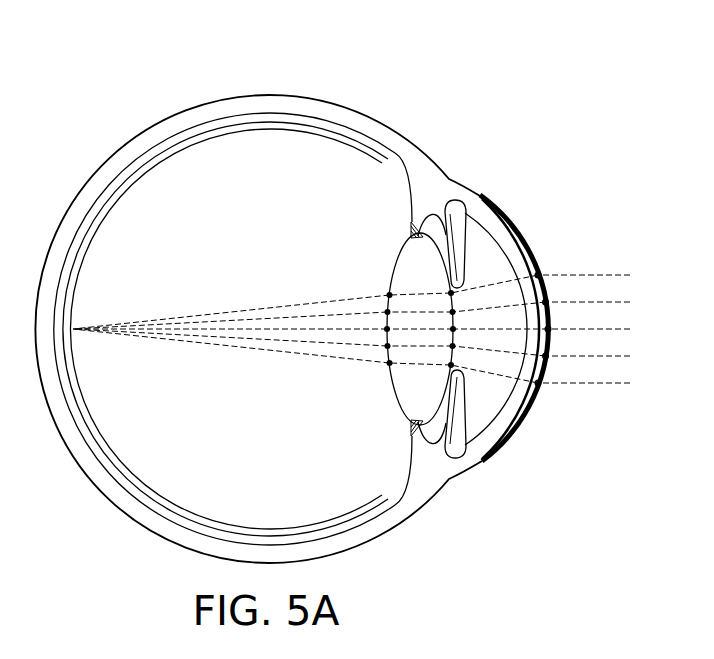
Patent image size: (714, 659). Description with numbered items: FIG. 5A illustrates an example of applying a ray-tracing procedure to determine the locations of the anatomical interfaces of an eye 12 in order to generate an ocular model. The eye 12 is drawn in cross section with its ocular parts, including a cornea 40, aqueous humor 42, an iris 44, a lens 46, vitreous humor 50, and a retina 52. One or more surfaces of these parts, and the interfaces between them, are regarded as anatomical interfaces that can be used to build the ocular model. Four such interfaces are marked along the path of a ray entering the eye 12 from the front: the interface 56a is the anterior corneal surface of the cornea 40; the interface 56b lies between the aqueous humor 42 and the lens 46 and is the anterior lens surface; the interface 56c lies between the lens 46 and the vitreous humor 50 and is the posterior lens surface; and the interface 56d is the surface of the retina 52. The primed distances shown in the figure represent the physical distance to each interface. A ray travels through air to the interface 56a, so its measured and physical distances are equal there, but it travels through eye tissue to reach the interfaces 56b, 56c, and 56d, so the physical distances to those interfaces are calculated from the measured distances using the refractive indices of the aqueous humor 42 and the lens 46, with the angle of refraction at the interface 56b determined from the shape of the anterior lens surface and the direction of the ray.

The eye 12 is at (88, 79).
The cornea 40 is at (528, 407).
The aqueous humor 42 is at (503, 443).
The iris 44 is at (441, 445).
The lens 46 is at (394, 272).
The vitreous humor 50 is at (231, 225).
The retina 52 is at (80, 378).
The interface 56a is at (528, 248).
The interface 56b is at (479, 198).
The interface 56c is at (396, 383).
The interface 56d is at (116, 458).